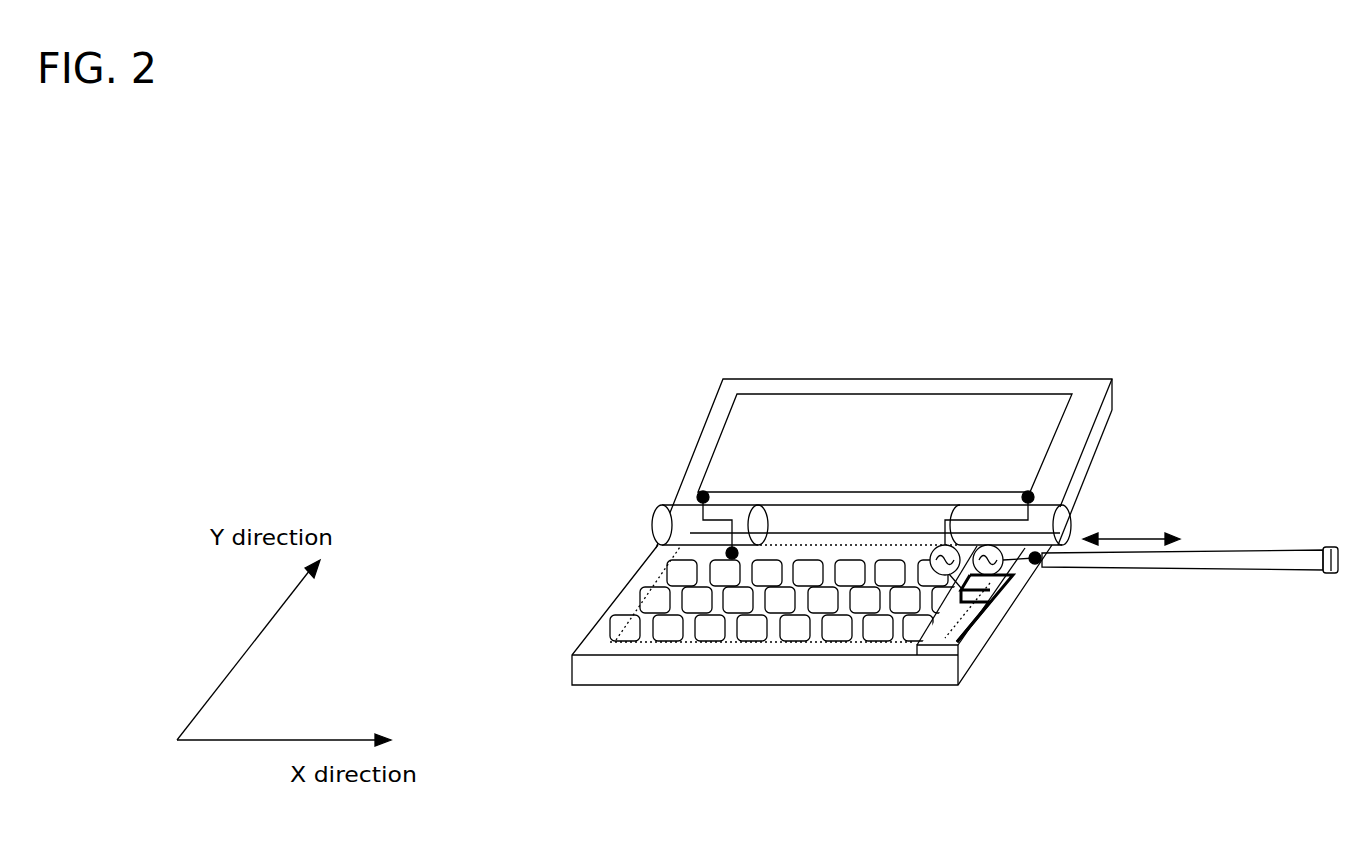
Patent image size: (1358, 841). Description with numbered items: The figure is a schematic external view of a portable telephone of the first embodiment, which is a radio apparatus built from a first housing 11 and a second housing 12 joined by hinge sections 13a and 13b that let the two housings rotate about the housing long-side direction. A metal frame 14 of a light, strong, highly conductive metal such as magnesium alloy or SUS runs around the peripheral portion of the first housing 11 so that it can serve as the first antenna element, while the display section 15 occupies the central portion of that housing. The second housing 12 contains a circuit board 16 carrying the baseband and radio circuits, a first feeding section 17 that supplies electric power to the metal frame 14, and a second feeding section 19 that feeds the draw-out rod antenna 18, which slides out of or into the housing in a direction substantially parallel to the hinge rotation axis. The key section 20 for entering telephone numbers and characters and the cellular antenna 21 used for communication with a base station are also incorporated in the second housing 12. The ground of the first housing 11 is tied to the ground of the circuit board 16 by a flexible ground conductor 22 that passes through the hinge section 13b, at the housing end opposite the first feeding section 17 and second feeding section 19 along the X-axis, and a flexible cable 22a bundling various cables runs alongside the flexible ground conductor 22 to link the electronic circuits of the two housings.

The first housing 11 is at (1031, 380).
The second housing 12 is at (585, 672).
The hinge section 13a is at (1013, 533).
The hinge section 13b is at (667, 537).
The metal frame 14 is at (1070, 437).
The display section 15 is at (850, 405).
The circuit board 16 is at (777, 643).
The first feeding section 17 is at (977, 607).
The draw-out rod antenna 18 is at (1225, 560).
The second feeding section 19 is at (997, 565).
The key section 20 is at (653, 604).
The cellular antenna 21 is at (932, 652).
The flexible ground conductor 22 is at (790, 479).
The flexible cable 22a is at (699, 496).